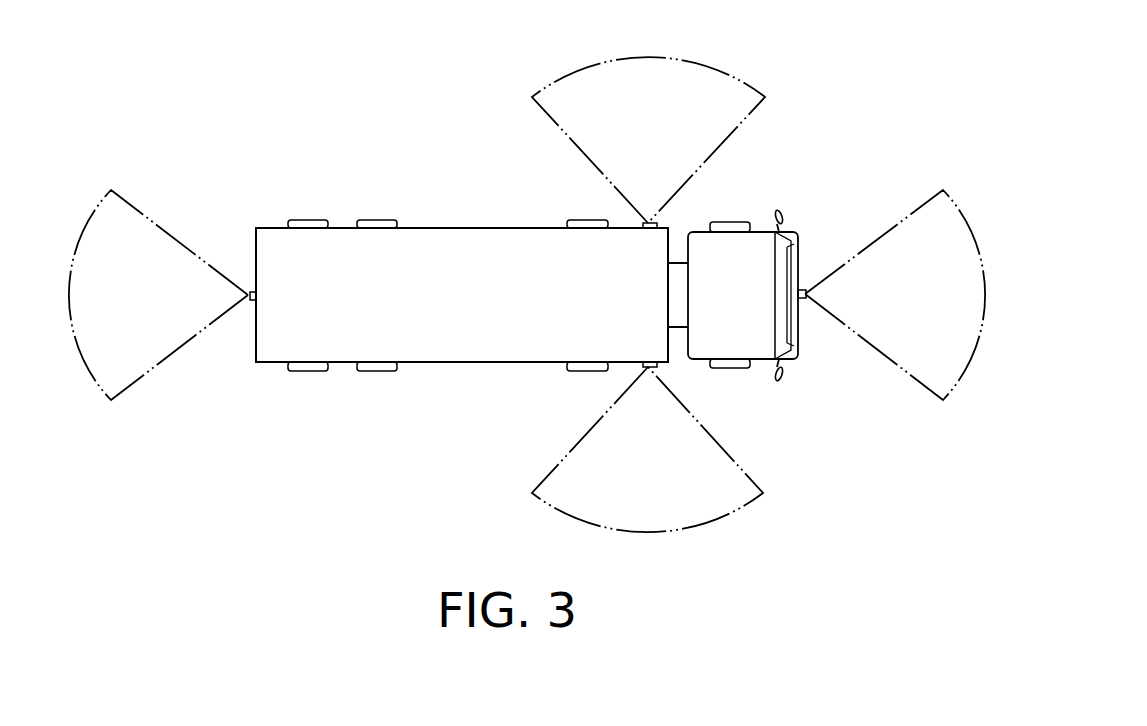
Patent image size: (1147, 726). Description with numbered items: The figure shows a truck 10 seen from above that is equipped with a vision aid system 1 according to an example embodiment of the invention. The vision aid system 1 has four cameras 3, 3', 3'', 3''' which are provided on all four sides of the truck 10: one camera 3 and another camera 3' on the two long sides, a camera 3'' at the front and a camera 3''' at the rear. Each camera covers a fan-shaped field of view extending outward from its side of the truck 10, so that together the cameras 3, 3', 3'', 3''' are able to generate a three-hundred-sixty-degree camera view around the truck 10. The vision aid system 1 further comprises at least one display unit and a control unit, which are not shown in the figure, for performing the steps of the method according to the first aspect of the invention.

The vision aid system 1 is at (352, 130).
The truck 10 is at (503, 228).
The camera 3 is at (637, 142).
The camera 3' is at (633, 447).
The camera 3'' is at (891, 289).
The camera 3''' is at (162, 289).